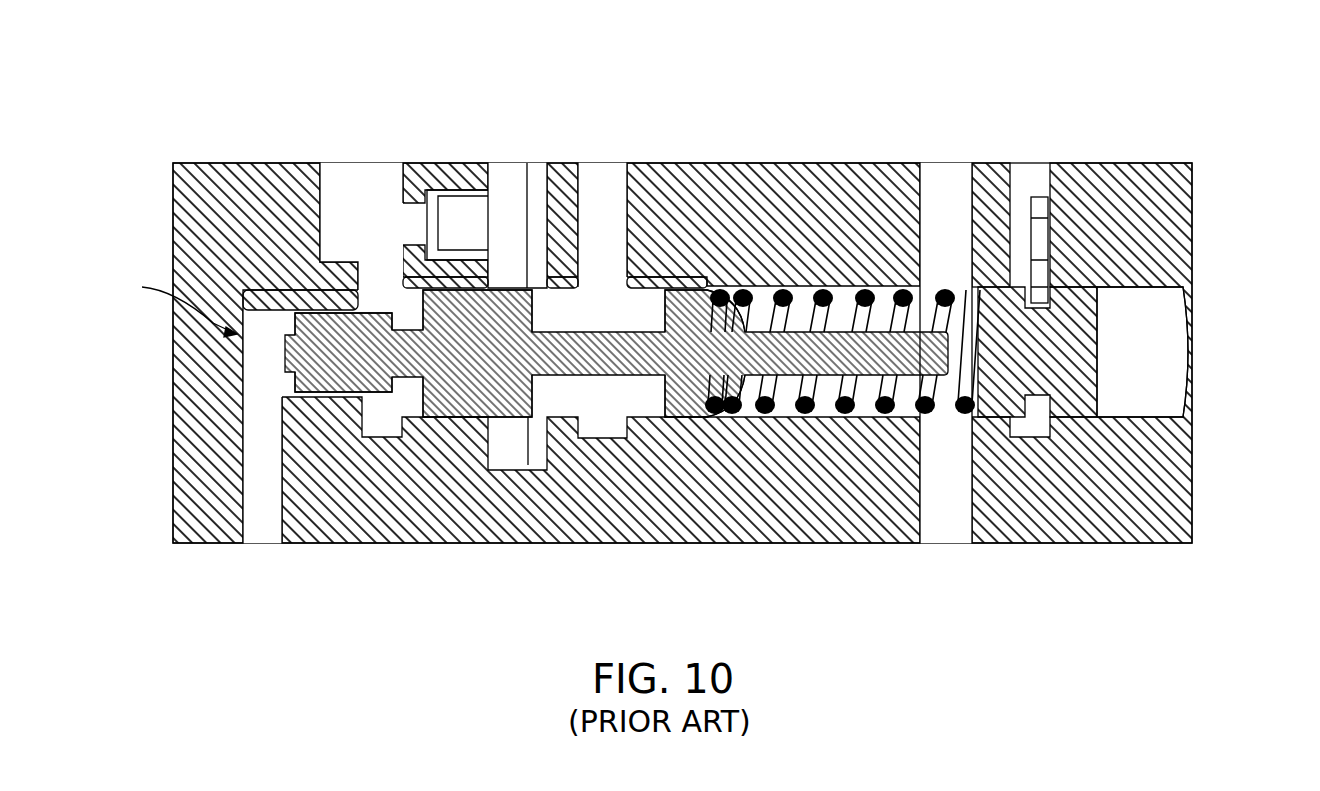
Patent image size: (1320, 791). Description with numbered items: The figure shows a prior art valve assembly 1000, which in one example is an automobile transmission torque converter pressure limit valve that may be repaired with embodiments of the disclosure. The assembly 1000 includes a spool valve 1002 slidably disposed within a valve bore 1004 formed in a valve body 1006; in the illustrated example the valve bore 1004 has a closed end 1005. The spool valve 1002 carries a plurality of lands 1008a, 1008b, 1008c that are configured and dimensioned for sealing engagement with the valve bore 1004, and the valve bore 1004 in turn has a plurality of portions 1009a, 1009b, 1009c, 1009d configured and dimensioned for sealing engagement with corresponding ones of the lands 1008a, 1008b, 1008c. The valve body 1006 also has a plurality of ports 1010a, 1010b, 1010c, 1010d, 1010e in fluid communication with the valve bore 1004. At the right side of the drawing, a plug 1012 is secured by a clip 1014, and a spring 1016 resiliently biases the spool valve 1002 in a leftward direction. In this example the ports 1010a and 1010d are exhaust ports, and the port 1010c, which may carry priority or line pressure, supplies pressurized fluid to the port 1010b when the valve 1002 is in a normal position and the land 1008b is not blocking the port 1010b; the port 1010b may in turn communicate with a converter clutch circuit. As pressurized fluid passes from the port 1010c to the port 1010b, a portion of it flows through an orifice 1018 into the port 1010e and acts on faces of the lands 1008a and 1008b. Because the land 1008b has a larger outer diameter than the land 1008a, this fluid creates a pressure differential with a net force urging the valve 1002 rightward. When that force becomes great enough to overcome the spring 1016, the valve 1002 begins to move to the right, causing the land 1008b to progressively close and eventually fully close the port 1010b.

The assembly 1000 is at (223, 83).
The spool valve 1002 is at (708, 300).
The valve bore 1004 is at (1170, 388).
The closed end 1005 is at (160, 305).
The valve body 1006 is at (1128, 180).
The land 1008a is at (312, 390).
The land 1008b is at (433, 414).
The land 1008c is at (687, 417).
The portion of valve bore 1009a is at (297, 290).
The portion of valve bore 1009b is at (438, 252).
The portion of valve bore 1009c is at (568, 277).
The portion of valve bore 1009d is at (705, 278).
The port 1010a is at (258, 530).
The port 1010b is at (510, 193).
The port 1010c is at (617, 193).
The port 1010d is at (942, 520).
The port 1010e is at (357, 193).
The plug 1012 is at (1082, 367).
The clip 1014 is at (1040, 207).
The spring 1016 is at (867, 290).
The orifice 1018 is at (427, 200).